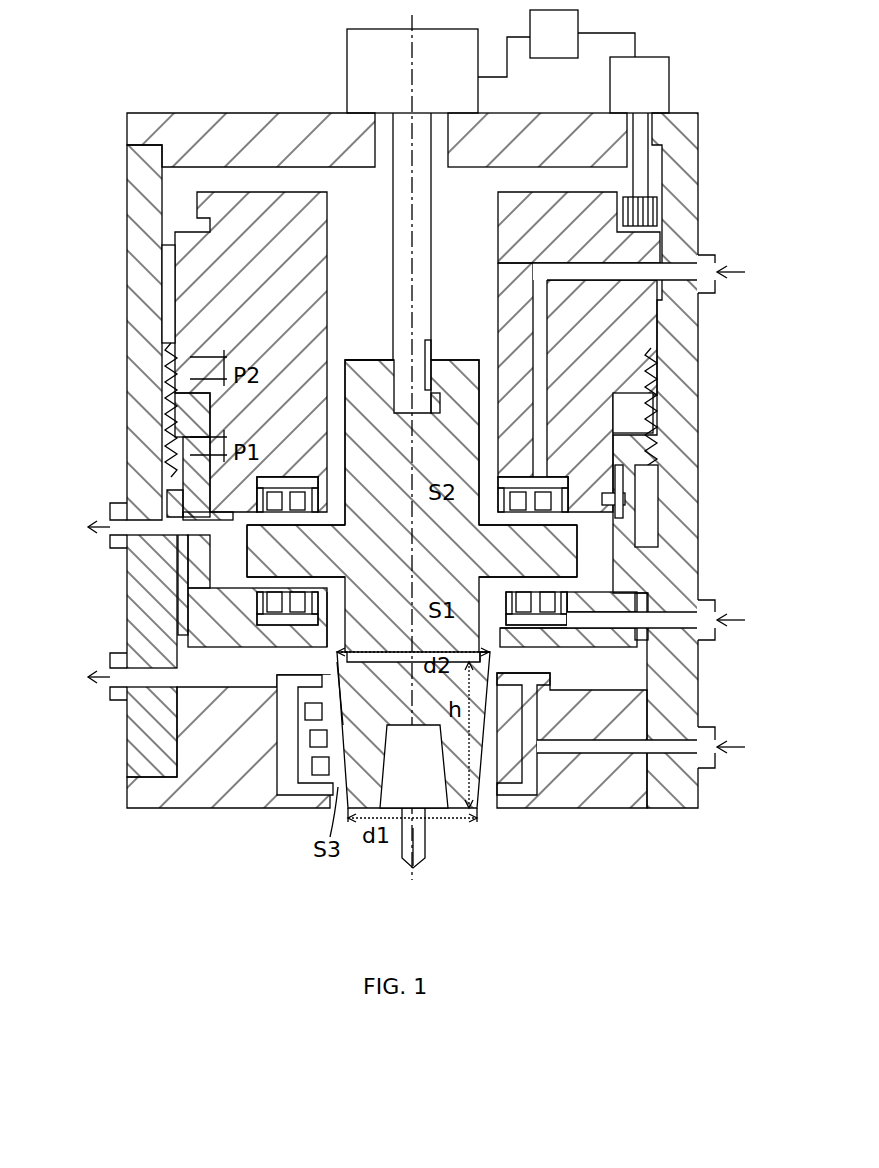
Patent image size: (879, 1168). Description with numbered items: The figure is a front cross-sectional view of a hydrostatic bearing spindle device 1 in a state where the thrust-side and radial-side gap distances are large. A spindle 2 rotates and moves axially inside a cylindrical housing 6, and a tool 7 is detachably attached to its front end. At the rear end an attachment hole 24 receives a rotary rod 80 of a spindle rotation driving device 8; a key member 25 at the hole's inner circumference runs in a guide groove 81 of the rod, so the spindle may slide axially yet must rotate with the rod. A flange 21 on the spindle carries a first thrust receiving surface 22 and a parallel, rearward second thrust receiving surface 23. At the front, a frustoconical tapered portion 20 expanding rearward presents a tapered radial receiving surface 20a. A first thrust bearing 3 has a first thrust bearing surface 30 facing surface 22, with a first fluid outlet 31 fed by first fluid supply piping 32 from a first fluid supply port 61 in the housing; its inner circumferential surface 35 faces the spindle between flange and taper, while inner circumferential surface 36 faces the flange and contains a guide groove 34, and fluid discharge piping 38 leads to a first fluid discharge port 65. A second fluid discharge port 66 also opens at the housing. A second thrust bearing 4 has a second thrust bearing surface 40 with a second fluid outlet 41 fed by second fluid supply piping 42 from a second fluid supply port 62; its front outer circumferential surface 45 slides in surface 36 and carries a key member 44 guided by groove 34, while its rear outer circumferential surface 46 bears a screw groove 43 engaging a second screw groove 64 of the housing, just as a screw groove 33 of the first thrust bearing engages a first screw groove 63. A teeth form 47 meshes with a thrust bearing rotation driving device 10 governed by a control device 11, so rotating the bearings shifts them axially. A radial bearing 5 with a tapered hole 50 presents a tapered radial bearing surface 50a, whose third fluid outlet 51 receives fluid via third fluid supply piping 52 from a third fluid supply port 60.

The hydrostatic bearing spindle device 1 is at (185, 88).
The spindle 2 is at (450, 792).
The first thrust bearing 3 is at (207, 632).
The second thrust bearing 4 is at (237, 333).
The radial bearing 5 is at (222, 793).
The housing 6 is at (142, 242).
The tool 7 is at (427, 790).
The spindle rotation driving device 8 is at (365, 80).
The thrust bearing rotation driving device 10 is at (655, 88).
The control device 11 is at (555, 48).
The tapered portion 20 is at (482, 775).
The tapered radial receiving surface 20a is at (490, 683).
The flange 21 is at (556, 555).
The first thrust receiving surface 22 is at (330, 593).
The second thrust receiving surface 23 is at (330, 523).
The attachment hole 24 is at (395, 360).
The key member 25 is at (437, 392).
The first thrust bearing surface 30 is at (190, 583).
The first fluid outlet 31 is at (287, 597).
The first fluid supply piping 32 is at (582, 620).
The screw groove 33 is at (178, 445).
The guide groove 34 is at (625, 513).
The inner circumferential surface 35 is at (327, 622).
The inner circumferential surface 36 is at (603, 578).
The fluid discharge piping 38 is at (177, 537).
The second thrust bearing surface 40 is at (167, 490).
The second fluid outlet 41 is at (282, 478).
The second fluid supply piping 42 is at (553, 278).
The screw groove 43 is at (168, 372).
The key member 44 is at (625, 498).
The outer circumferential surface 45 is at (210, 417).
The outer circumferential surface 46 is at (168, 290).
The teeth form 47 is at (655, 212).
The tapered hole 50 is at (343, 730).
The tapered radial bearing surface 50a is at (343, 697).
The third fluid outlet 51 is at (300, 723).
The third fluid supply piping 52 is at (593, 743).
The third fluid supply port 60 is at (702, 757).
The first fluid supply port 61 is at (700, 618).
The second fluid supply port 62 is at (690, 276).
The first screw groove 63 is at (655, 484).
The second screw groove 64 is at (655, 416).
The first fluid discharge port 65 is at (155, 524).
The second fluid discharge port 66 is at (133, 675).
The rotary rod 80 is at (423, 282).
The guide groove 81 is at (428, 340).